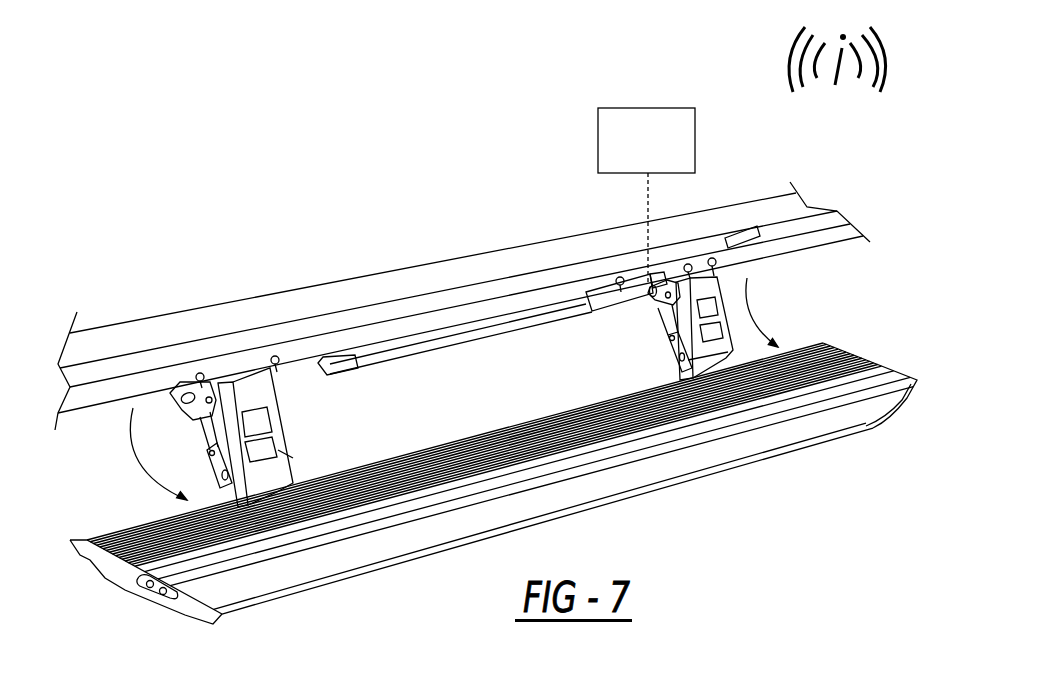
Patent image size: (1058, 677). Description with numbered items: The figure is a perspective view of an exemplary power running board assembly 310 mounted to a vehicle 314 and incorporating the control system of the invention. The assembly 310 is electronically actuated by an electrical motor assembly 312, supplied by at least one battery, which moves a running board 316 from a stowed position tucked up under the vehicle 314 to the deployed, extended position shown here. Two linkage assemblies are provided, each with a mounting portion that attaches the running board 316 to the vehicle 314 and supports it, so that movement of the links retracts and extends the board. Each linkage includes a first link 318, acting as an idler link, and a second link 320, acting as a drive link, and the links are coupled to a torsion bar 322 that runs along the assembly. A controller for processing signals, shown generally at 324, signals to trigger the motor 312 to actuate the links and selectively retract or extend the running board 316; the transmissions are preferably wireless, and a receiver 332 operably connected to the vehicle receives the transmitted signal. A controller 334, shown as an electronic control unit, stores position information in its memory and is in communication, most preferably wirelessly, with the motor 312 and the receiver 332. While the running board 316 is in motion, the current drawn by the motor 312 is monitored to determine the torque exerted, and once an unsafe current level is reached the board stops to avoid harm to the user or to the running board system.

The power running board assembly 310 is at (493, 508).
The electrical motor assembly 312 is at (648, 318).
The vehicle 314 is at (805, 204).
The running board 316 is at (657, 473).
The first link 318 is at (297, 426).
The second link 320 is at (744, 275).
The torsion bar 322 is at (485, 336).
The controller signal 324 is at (780, 57).
The receiver 332 is at (757, 232).
The controller 334 is at (598, 154).